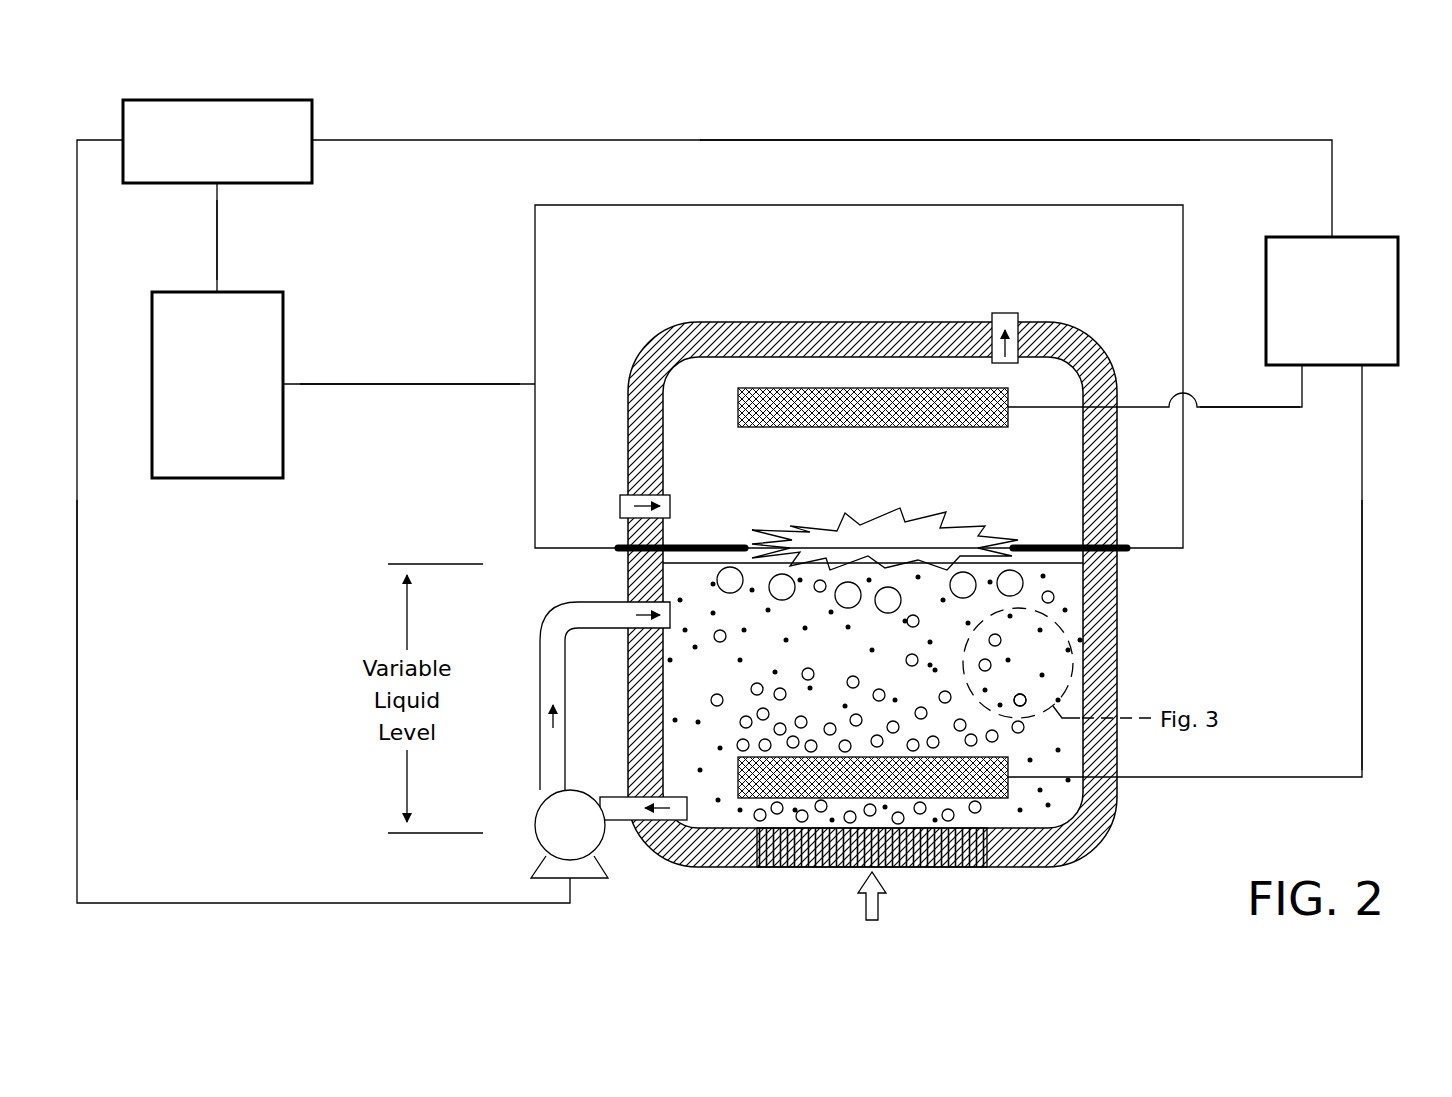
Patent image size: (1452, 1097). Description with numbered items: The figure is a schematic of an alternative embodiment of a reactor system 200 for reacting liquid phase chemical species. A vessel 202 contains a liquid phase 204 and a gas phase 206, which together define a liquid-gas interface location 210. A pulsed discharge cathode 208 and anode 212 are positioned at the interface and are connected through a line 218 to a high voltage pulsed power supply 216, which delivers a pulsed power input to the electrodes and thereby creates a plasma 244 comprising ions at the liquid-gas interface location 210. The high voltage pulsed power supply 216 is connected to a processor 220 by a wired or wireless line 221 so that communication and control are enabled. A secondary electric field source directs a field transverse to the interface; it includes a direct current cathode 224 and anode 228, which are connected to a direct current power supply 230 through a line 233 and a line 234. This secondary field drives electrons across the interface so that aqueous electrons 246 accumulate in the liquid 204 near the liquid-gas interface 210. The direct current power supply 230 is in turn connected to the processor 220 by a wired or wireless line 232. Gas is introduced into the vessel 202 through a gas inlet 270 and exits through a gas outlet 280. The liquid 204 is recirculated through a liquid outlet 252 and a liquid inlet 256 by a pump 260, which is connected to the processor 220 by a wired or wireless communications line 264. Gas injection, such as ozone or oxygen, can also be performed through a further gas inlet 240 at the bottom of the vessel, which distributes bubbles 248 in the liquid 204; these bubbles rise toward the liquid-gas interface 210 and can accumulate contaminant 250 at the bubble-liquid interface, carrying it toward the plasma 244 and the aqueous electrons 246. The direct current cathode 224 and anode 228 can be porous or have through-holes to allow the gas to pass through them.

The reactor system 200 is at (1305, 78).
The vessel 202 is at (1100, 495).
The liquid phase 204 is at (1070, 740).
The gas phase 206 is at (1050, 440).
The pulsed discharge cathode 208 is at (740, 545).
The liquid-gas interface location 210 is at (1060, 568).
The pulsed discharge anode 212 is at (1012, 545).
The high voltage pulsed power supply 216 is at (283, 335).
The line 218 is at (425, 384).
The processor 220 is at (270, 100).
The line 221 is at (217, 237).
The direct current cathode 224 is at (1010, 790).
The direct current anode 228 is at (790, 388).
The direct current power supply 230 is at (1370, 237).
The line 232 is at (967, 140).
The line 233 is at (1215, 407).
The line 234 is at (1363, 707).
The gas inlet 240 is at (970, 867).
The plasma 244 is at (905, 513).
The aqueous electrons 246 is at (855, 607).
The bubbles 248 is at (1026, 698).
The contaminant 250 is at (1058, 649).
The liquid outlet 252 is at (695, 808).
The liquid inlet 256 is at (672, 606).
The pump 260 is at (540, 840).
The communications line 264 is at (77, 663).
The gas inlet 270 is at (620, 505).
The gas outlet 280 is at (1005, 313).